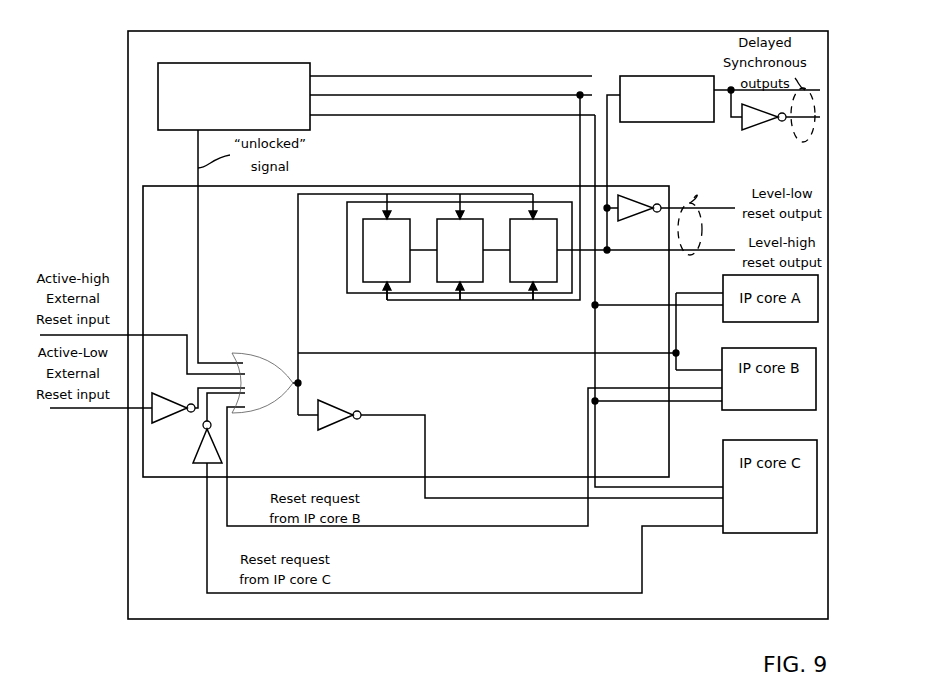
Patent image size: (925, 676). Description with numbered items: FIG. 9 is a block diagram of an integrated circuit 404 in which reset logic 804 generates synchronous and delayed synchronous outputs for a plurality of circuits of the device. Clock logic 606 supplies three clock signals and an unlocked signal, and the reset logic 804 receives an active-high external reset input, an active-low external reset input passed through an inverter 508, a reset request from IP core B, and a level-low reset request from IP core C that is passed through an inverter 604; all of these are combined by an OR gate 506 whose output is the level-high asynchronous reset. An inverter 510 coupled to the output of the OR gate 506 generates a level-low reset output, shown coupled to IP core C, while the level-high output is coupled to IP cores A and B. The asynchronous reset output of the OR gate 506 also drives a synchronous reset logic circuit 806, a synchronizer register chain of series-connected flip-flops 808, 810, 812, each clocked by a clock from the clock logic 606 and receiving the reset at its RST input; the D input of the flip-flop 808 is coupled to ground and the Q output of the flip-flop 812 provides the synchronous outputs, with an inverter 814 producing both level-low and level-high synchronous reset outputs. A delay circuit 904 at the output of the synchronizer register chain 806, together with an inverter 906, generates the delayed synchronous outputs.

The integrated circuit 404 is at (685, 31).
The clock logic 606 is at (311, 70).
The reset logic 804 is at (143, 255).
The synchronous reset logic circuit 806 is at (347, 228).
The flip-flop 808 is at (403, 205).
The flip-flop 810 is at (475, 220).
The flip-flop 812 is at (543, 220).
The inverter 814 is at (630, 217).
The delay circuit 904 is at (637, 76).
The inverter 906 is at (742, 127).
The OR gate 506 is at (303, 351).
The inverter 510 is at (343, 408).
The inverter 508 is at (152, 422).
The inverter 604 is at (197, 463).